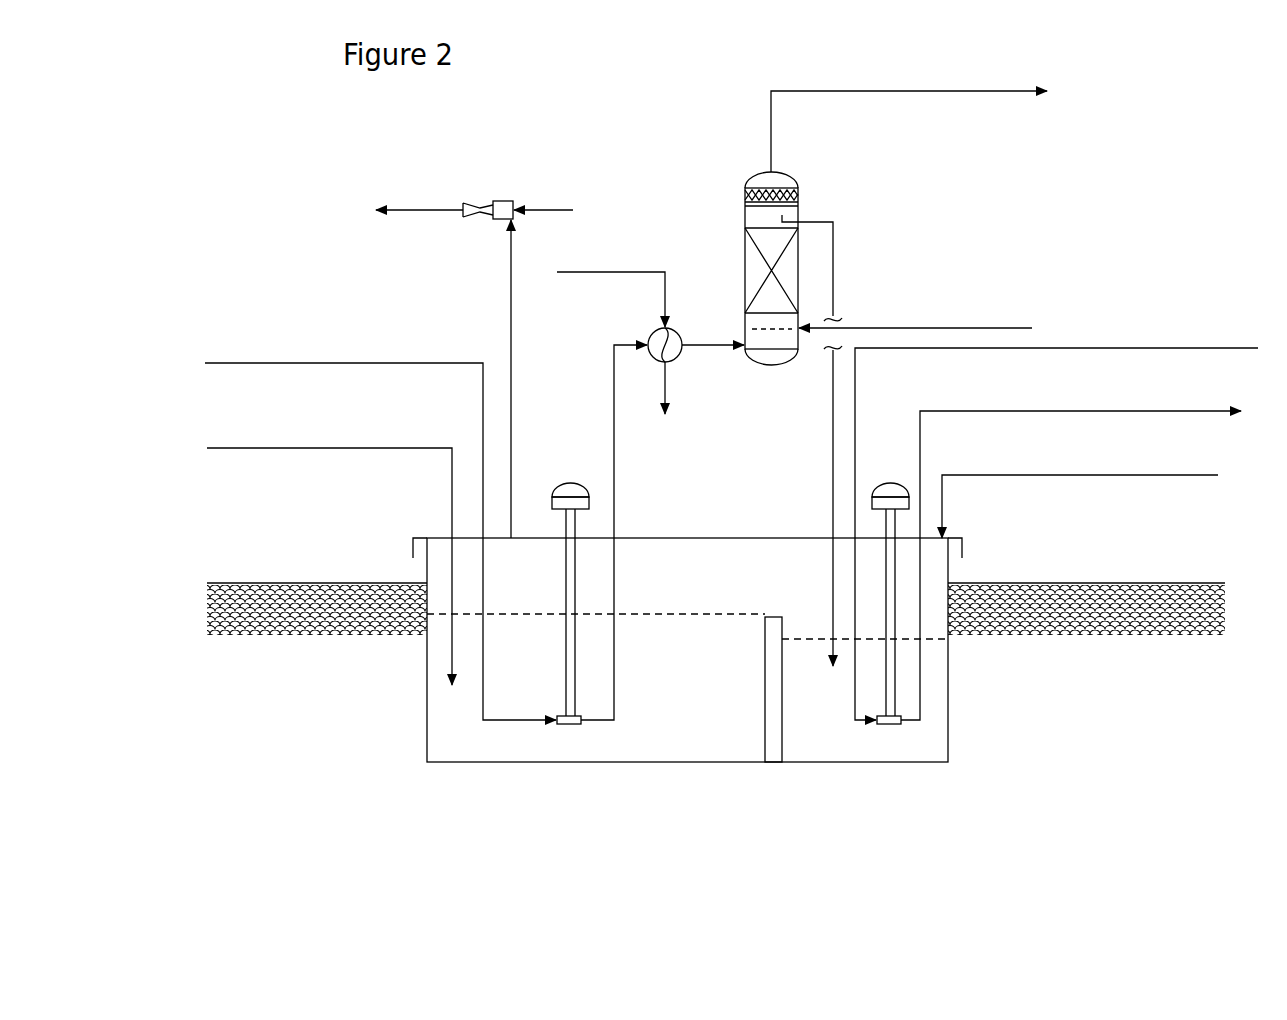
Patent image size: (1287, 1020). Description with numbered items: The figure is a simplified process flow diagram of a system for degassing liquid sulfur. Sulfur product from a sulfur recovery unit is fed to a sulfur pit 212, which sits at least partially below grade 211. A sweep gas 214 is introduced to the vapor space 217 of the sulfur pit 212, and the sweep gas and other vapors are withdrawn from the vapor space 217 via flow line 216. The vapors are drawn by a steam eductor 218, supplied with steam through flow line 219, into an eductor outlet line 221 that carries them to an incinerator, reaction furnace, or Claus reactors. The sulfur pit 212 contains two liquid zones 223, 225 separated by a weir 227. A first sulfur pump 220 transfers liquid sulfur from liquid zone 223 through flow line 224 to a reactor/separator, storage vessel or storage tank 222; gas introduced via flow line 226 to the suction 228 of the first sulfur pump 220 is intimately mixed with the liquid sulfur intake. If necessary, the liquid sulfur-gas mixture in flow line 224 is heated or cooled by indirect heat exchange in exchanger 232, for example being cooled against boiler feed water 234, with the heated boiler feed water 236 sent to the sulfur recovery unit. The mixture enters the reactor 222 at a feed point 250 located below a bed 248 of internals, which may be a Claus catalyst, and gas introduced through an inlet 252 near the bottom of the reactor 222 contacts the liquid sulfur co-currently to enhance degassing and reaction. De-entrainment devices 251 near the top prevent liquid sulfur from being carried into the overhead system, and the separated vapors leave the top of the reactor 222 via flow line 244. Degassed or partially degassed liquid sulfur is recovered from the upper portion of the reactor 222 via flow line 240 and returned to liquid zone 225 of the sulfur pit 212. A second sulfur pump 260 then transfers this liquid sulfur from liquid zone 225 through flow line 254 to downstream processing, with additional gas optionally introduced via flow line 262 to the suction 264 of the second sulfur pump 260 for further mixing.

The grade 211 is at (272, 582).
The sulfur pit 212 is at (427, 740).
The sweep gas 214 is at (297, 450).
The flow line 216 is at (512, 320).
The vapor space 217 is at (700, 592).
The steam eductor 218 is at (497, 200).
The flow line 219 is at (548, 214).
The first sulfur pump 220 is at (568, 483).
The eductor outlet line 221 is at (406, 213).
The reactor/separator, storage vessel or storage tank 222 is at (756, 180).
The liquid zone 223 is at (745, 729).
The flow line 224 is at (614, 416).
The liquid zone 225 is at (842, 744).
The flow line 226 is at (278, 362).
The weir 227 is at (768, 762).
The suction 228 is at (560, 724).
The exchanger 232 is at (655, 332).
The boiler feed water 234 is at (636, 272).
The heated boiler feed water 236 is at (668, 390).
The flow line 240 is at (840, 268).
The flow line 244 is at (986, 94).
The bed 248 is at (752, 262).
The feed point 250 is at (732, 341).
The de-entrainment devices 251 is at (802, 197).
The inlet 252 is at (975, 326).
The flow line 254 is at (1033, 414).
The second sulfur pump 260 is at (890, 483).
The flow line 262 is at (1170, 346).
The suction 264 is at (880, 724).